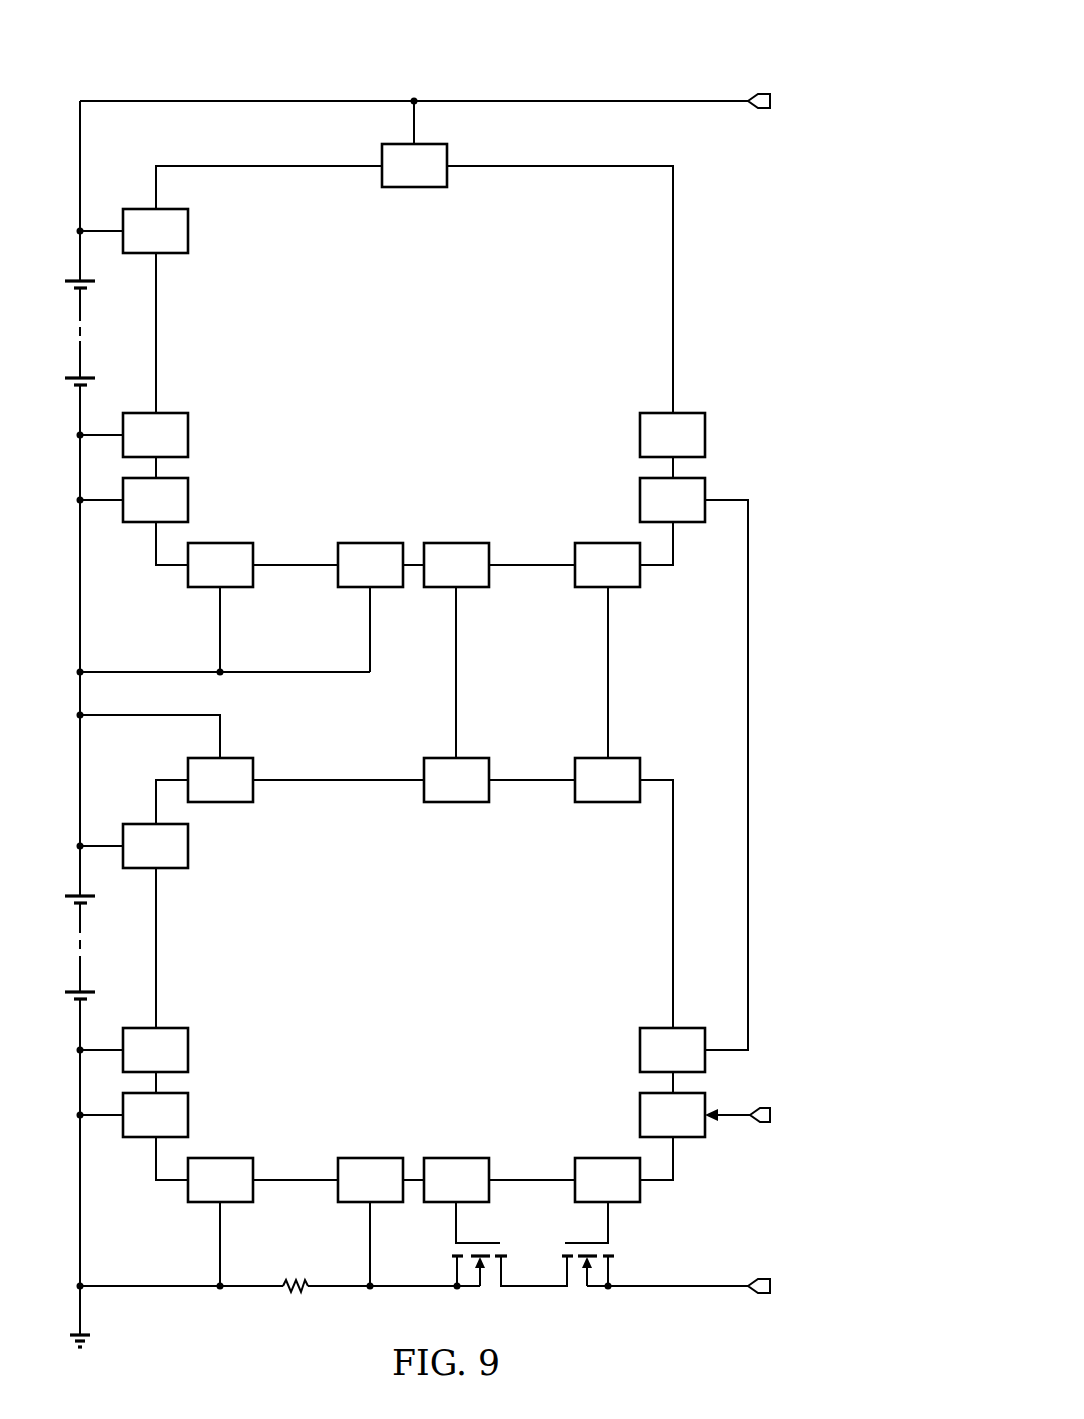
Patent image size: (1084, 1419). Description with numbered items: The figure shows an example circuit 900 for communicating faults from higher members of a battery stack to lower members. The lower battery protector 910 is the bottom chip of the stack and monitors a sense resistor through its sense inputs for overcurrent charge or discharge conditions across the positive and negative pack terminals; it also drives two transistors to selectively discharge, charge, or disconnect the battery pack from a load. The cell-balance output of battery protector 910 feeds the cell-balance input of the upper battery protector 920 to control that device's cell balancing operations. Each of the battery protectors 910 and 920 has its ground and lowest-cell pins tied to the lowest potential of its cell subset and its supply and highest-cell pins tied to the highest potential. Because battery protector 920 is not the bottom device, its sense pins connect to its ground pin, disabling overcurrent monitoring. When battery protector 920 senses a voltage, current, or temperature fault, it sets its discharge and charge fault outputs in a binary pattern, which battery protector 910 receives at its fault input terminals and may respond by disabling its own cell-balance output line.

The circuit 900 is at (698, 52).
The battery protector 910 is at (433, 985).
The battery protector 920 is at (433, 370).